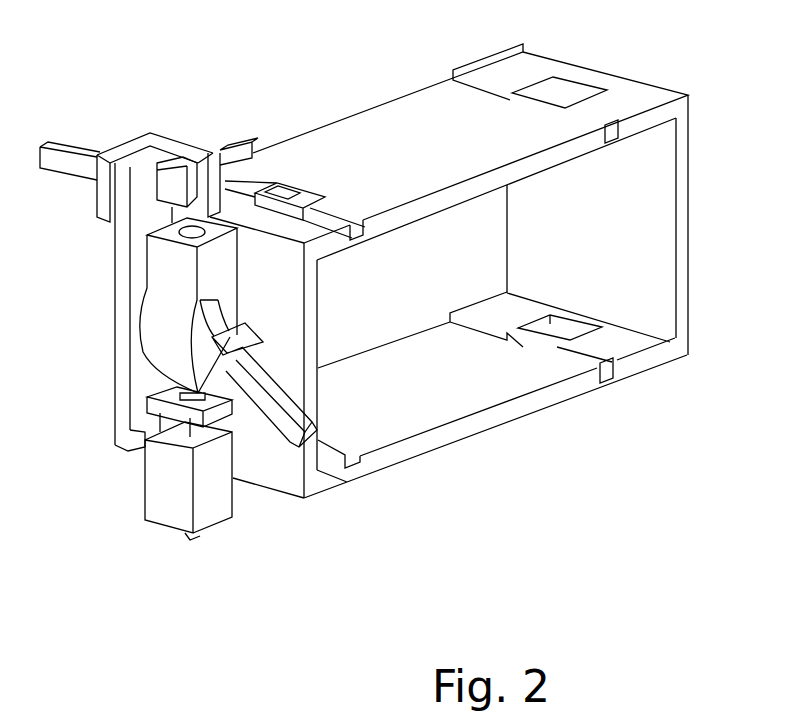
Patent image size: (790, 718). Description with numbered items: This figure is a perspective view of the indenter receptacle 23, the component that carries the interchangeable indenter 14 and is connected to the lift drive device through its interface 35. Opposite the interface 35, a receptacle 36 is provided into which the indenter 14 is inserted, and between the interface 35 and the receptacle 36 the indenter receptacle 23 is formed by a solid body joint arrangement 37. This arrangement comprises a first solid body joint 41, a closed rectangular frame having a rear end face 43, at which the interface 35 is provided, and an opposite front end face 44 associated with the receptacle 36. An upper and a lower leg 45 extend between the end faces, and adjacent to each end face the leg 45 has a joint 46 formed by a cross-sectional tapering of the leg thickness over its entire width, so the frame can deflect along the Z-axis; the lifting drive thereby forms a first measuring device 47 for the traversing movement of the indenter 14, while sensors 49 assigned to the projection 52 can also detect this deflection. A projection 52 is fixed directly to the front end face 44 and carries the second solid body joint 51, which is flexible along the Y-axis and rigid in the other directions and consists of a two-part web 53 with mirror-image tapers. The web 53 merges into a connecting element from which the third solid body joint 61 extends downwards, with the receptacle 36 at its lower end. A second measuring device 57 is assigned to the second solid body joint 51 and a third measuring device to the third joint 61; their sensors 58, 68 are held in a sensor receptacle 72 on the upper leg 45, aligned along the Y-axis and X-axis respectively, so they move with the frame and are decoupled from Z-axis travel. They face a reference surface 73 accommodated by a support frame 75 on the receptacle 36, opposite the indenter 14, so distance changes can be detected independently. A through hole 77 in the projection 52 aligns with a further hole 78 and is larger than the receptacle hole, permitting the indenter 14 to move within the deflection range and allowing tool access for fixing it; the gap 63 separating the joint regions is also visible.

The indenter 14 is at (188, 540).
The indenter receptacle 23 is at (502, 464).
The interface 35 is at (482, 292).
The receptacle 36 is at (171, 526).
The solid body joint arrangement 37 is at (433, 492).
The first solid body joint 41 is at (553, 438).
The rear end face 43 is at (680, 260).
The front end face 44 is at (312, 282).
The leg 45 is at (393, 128).
The joint 46 is at (451, 78).
The first measuring device 47 is at (282, 376).
The sensors 49 is at (287, 428).
The second solid body joint 51 is at (150, 391).
The projection 52 is at (139, 275).
The web 53 is at (264, 441).
The second measuring device 57 is at (190, 257).
The sensor 58 is at (240, 137).
The third solid body joint 61 is at (139, 443).
The gap 63 is at (157, 422).
The sensor 68 is at (58, 147).
The sensor receptacle 72 is at (151, 136).
The reference surface 73 is at (138, 157).
The support frame 75 is at (118, 280).
The through hole 77 is at (185, 212).
The further hole 78 is at (187, 358).